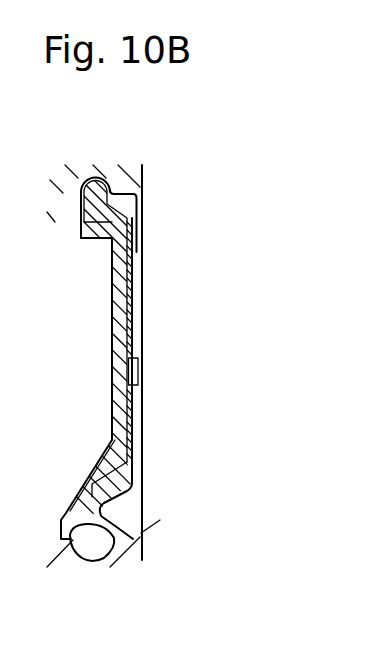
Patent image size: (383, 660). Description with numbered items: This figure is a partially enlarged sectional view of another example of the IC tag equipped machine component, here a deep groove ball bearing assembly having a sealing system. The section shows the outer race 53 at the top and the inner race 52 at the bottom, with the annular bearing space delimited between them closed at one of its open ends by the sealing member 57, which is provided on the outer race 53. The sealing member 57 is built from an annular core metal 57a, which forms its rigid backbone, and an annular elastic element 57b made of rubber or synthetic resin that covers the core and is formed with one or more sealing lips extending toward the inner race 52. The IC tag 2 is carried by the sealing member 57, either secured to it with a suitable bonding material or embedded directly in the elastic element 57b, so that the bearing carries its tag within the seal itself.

The IC tag 2 is at (140, 377).
The inner race 52 is at (137, 532).
The outer race 53 is at (132, 185).
The sealing member 57 is at (158, 330).
The core metal 57a is at (130, 353).
The elastic element 57b is at (130, 310).